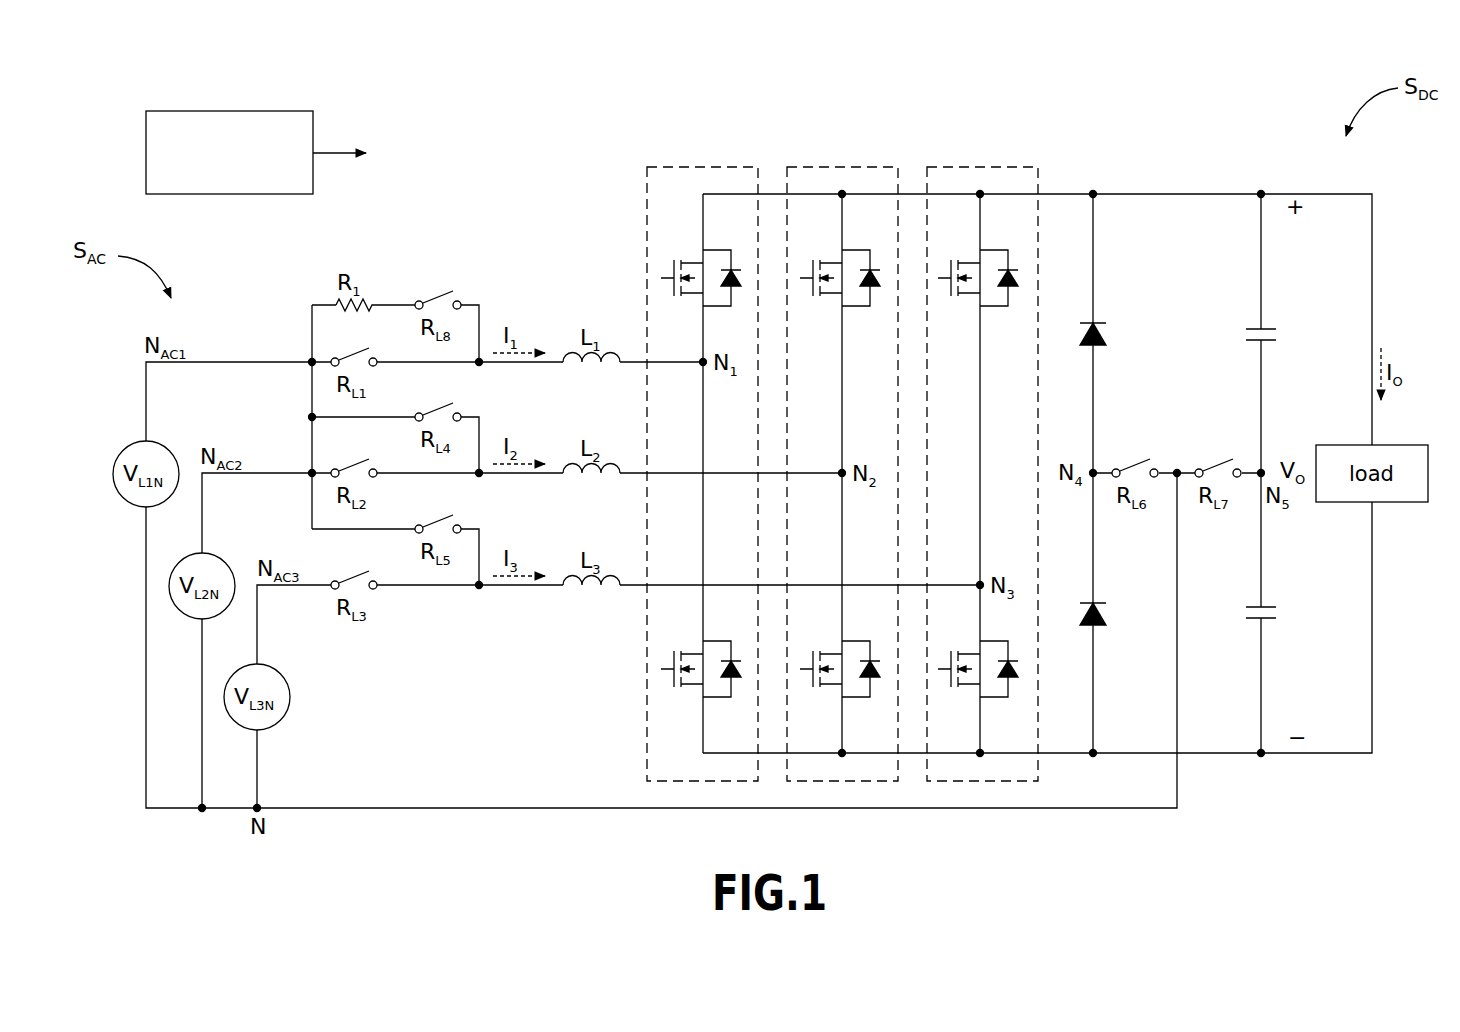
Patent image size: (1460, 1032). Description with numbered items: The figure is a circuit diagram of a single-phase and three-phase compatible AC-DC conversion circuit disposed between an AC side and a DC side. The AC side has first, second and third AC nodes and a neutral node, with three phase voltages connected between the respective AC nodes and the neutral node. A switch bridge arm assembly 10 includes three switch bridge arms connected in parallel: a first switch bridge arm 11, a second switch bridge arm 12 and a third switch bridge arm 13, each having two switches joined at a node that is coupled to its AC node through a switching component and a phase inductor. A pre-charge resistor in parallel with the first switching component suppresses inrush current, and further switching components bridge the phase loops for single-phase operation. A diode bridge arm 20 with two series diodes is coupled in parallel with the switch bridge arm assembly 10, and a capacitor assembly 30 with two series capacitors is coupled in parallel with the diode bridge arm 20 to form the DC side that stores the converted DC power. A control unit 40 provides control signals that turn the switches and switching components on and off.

The switch bridge arm assembly 10 is at (948, 92).
The first switch bridge arm 11 is at (703, 167).
The second switch bridge arm 12 is at (842, 167).
The third switch bridge arm 13 is at (980, 167).
The diode bridge arm 20 is at (1094, 185).
The capacitor assembly 30 is at (1262, 185).
The control unit 40 is at (232, 126).